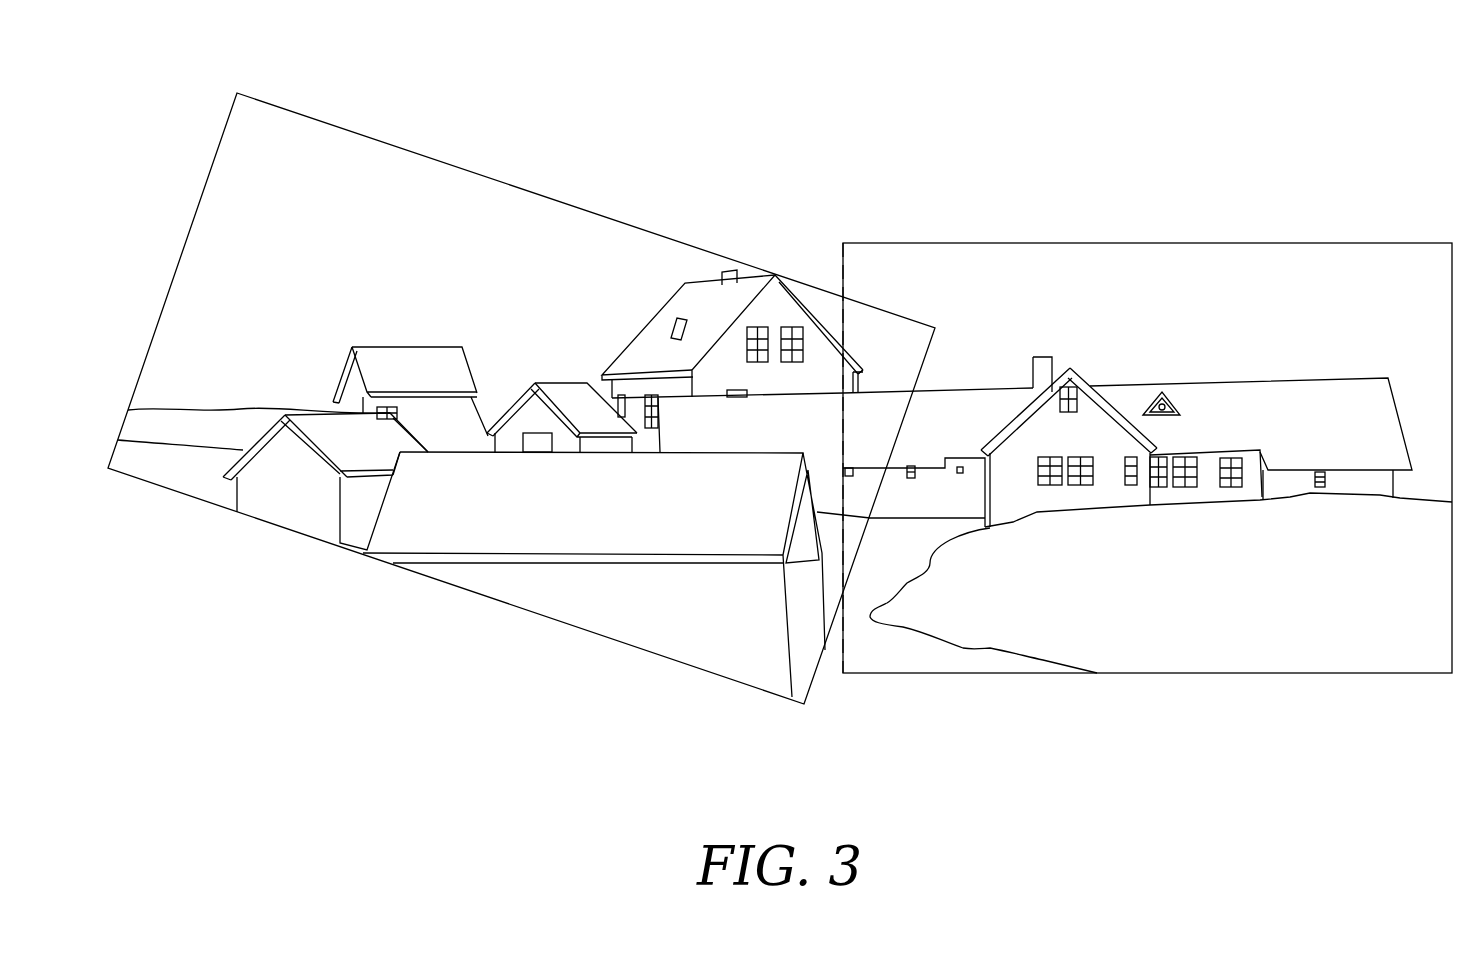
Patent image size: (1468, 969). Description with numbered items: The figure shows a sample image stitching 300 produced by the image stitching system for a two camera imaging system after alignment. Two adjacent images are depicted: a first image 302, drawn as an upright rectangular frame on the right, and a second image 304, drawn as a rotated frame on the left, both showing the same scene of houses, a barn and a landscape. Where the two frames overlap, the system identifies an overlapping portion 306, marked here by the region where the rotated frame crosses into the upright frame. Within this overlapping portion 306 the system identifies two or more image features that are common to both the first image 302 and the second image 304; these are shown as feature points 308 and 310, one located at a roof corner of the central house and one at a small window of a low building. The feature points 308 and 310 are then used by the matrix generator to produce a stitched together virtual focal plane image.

The image stitching example 300 is at (775, 383).
The first image 302 is at (1370, 288).
The second image 304 is at (282, 160).
The overlapping portion 306 is at (878, 337).
The feature point 308 is at (868, 380).
The feature point 310 is at (858, 482).